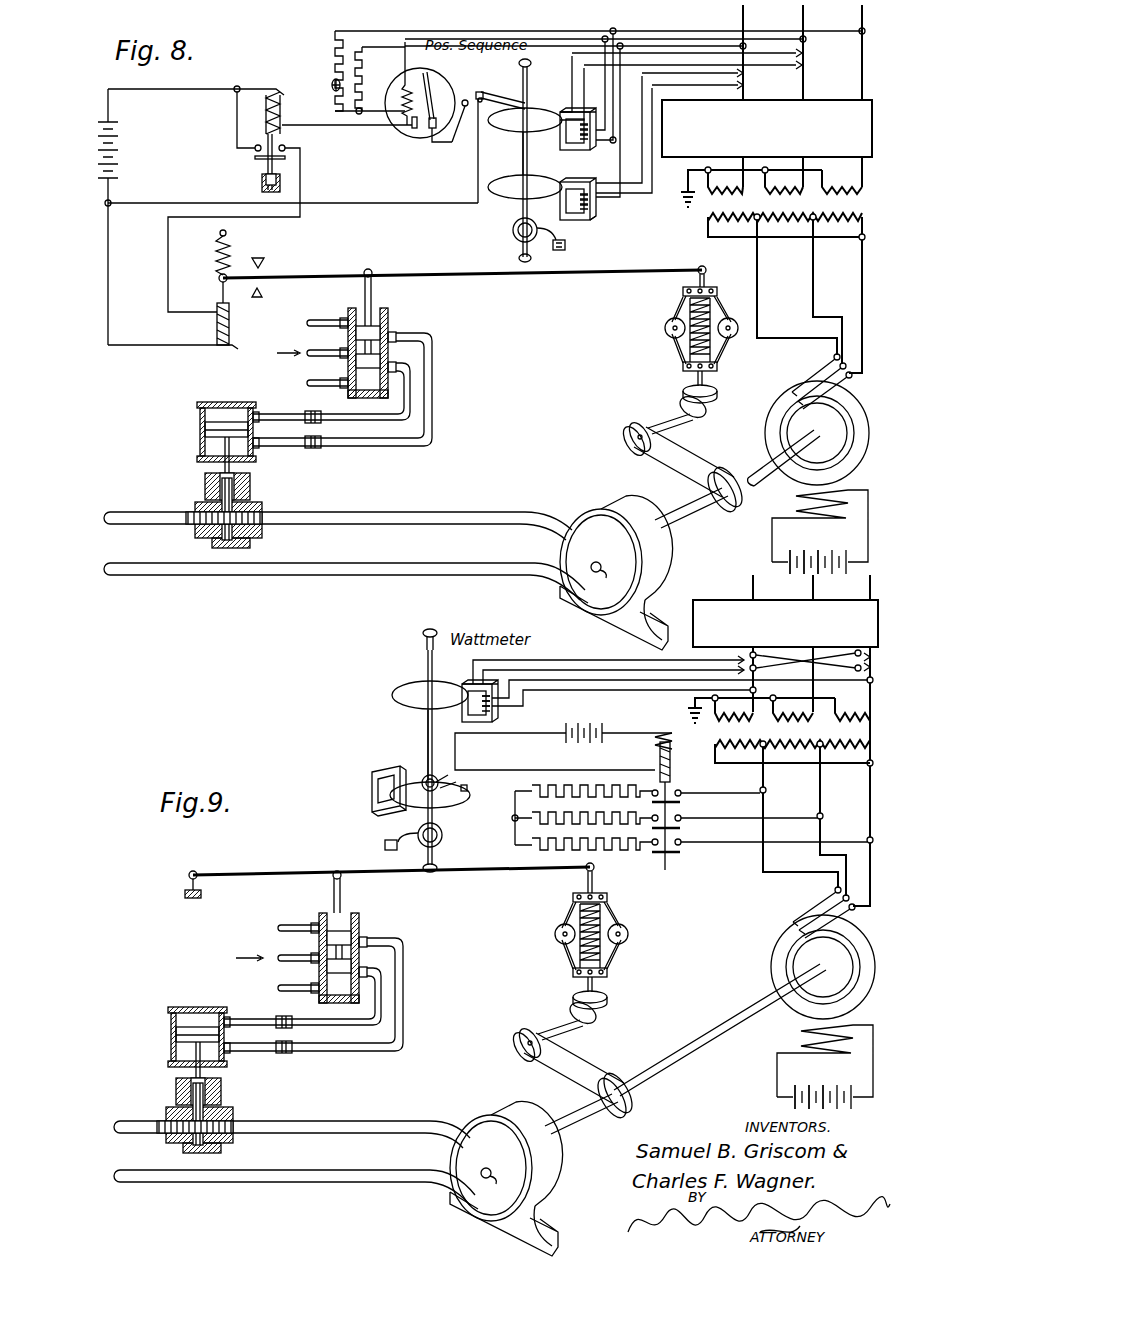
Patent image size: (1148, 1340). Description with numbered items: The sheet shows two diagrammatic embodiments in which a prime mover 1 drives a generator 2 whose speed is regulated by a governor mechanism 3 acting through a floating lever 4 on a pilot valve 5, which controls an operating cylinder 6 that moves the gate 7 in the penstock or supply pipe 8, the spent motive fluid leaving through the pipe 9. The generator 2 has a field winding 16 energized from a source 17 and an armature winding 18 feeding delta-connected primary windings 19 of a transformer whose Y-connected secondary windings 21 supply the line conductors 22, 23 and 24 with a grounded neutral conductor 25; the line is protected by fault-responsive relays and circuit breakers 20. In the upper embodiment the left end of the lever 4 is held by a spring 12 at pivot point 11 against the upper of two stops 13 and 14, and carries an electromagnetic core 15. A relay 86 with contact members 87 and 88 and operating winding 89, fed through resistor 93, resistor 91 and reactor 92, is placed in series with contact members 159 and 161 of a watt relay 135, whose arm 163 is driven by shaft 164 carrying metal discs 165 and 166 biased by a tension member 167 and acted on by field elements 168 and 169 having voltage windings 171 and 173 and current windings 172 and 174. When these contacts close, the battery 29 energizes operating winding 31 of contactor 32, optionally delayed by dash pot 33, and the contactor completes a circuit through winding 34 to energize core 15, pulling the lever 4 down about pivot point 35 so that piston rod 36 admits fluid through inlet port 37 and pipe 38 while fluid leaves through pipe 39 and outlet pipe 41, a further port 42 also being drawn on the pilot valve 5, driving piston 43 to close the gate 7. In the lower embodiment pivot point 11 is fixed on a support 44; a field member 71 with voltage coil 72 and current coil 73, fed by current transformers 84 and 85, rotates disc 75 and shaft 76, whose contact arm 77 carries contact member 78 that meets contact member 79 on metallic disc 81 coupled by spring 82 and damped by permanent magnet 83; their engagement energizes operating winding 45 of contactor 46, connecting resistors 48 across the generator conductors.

In FIG. 8, the prime mover 1 is at (598, 492).
In FIG. 9, the prime mover 1 is at (488, 1098).
In FIG. 8, the generator 2 is at (750, 418).
In FIG. 9, the generator 2 is at (756, 952).
In FIG. 8, the governor mechanism 3 is at (657, 354).
In FIG. 9, the governor mechanism 3 is at (545, 960).
In FIG. 8, the floating lever 4 is at (648, 270).
In FIG. 9, the floating lever 4 is at (486, 870).
In FIG. 8, the pilot valve 5 is at (412, 318).
In FIG. 9, the pilot valve 5 is at (351, 955).
In FIG. 8, the operating cylinder 6 is at (185, 436).
In FIG. 9, the operating cylinder 6 is at (187, 1043).
In FIG. 8, the gate 7 is at (185, 498).
In FIG. 9, the gate 7 is at (189, 1115).
In FIG. 8, the penstock or supply pipe 8 is at (415, 512).
In FIG. 9, the penstock or supply pipe 8 is at (341, 1120).
In FIG. 8, the pipe 9 is at (415, 563).
In FIG. 9, the pipe 9 is at (341, 1170).
In FIG. 8, the pivot point 11 is at (218, 274).
In FIG. 9, the pivot point 11 is at (189, 877).
In FIG. 8, the spring 12 is at (216, 248).
In FIG. 8, the stop 13 is at (266, 260).
In FIG. 8, the stop 14 is at (264, 293).
In FIG. 8, the electromagnetic core 15 is at (232, 311).
In FIG. 8, the field winding 16 is at (838, 516).
In FIG. 9, the field winding 16 is at (836, 1052).
In FIG. 8, the source 17 is at (810, 550).
In FIG. 9, the source 17 is at (840, 1098).
In FIG. 8, the armature winding 18 is at (860, 404).
In FIG. 9, the armature winding 18 is at (792, 1008).
In FIG. 8, the primary windings 19 is at (708, 228).
In FIG. 9, the primary windings 19 is at (714, 756).
In FIG. 8, the fault-responsive relays and circuit breakers 20 is at (815, 100).
In FIG. 9, the fault-responsive relays and circuit breakers 20 is at (703, 600).
In FIG. 8, the secondary windings 21 is at (714, 197).
In FIG. 9, the secondary windings 21 is at (717, 725).
In FIG. 8, the transmission line conductor 22 is at (724, 96).
In FIG. 9, the transmission line conductor 22 is at (739, 643).
In FIG. 8, the transmission line conductor 23 is at (784, 96).
In FIG. 9, the transmission line conductor 23 is at (794, 643).
In FIG. 8, the transmission line conductor 24 is at (844, 189).
In FIG. 9, the transmission line conductor 24 is at (855, 740).
In FIG. 8, the grounded neutral conductor 25 is at (684, 182).
In FIG. 9, the grounded neutral conductor 25 is at (692, 707).
In FIG. 8, the battery 29 is at (122, 152).
In FIG. 9, the battery 29 is at (588, 727).
In FIG. 8, the operating winding 31 is at (283, 112).
In FIG. 8, the contactor 32 is at (255, 158).
In FIG. 8, the dash pot 33 is at (262, 185).
In FIG. 8, the winding 34 is at (232, 337).
In FIG. 8, the pivot point 35 is at (707, 266).
In FIG. 9, the pivot point 35 is at (595, 869).
In FIG. 8, the piston rod 36 is at (372, 290).
In FIG. 9, the piston rod 36 is at (342, 892).
In FIG. 8, the inlet port 37 is at (316, 353).
In FIG. 9, the inlet port 37 is at (277, 952).
In FIG. 8, the pipe 38 is at (384, 421).
In FIG. 9, the pipe 38 is at (302, 1004).
In FIG. 8, the pipe 39 is at (384, 447).
In FIG. 9, the pipe 39 is at (313, 1002).
In FIG. 8, the outlet pipe 41 is at (315, 323).
In FIG. 9, the outlet pipe 41 is at (290, 922).
In FIG. 8, the exhaust port 42 is at (315, 383).
In FIG. 9, the exhaust port 42 is at (290, 982).
In FIG. 8, the piston 43 is at (236, 428).
In FIG. 9, the piston 43 is at (197, 1026).
In FIG. 9, the support 44 is at (185, 894).
In FIG. 9, the operating winding 45 is at (658, 752).
In FIG. 9, the contactor 46 is at (690, 853).
In FIG. 9, the resistors 48 is at (565, 852).
In FIG. 9, the field member 71 is at (462, 716).
In FIG. 9, the voltage coil 72 is at (496, 708).
In FIG. 9, the current coil 73 is at (472, 684).
In FIG. 9, the disc 75 is at (405, 680).
In FIG. 9, the shaft 76 is at (425, 718).
In FIG. 9, the contact arm 77 is at (438, 780).
In FIG. 9, the contact member 78 is at (452, 784).
In FIG. 9, the contact member 79 is at (468, 787).
In FIG. 9, the metallic disc 81 is at (455, 803).
In FIG. 9, the spring 82 is at (424, 779).
In FIG. 9, the permanent magnet 83 is at (372, 798).
In FIG. 9, the current transformer 84 is at (788, 664).
In FIG. 9, the current transformer 85 is at (855, 670).
In FIG. 8, the relay 86 is at (457, 67).
In FIG. 8, the contact member 87 is at (431, 130).
In FIG. 8, the contact member 88 is at (412, 126).
In FIG. 8, the operating winding 89 is at (402, 84).
In FIG. 8, the resistor 91 is at (334, 46).
In FIG. 8, the reactor 92 is at (333, 84).
In FIG. 8, the resistor 93 is at (364, 57).
In FIG. 8, the watt relay 135 is at (560, 66).
In FIG. 8, the contact member 159 is at (459, 136).
In FIG. 8, the contact member 161 is at (486, 90).
In FIG. 8, the arm 163 is at (506, 97).
In FIG. 8, the shaft 164 is at (522, 157).
In FIG. 8, the metal disc 165 is at (510, 125).
In FIG. 8, the metal disc 166 is at (506, 196).
In FIG. 8, the tension member 167 is at (512, 232).
In FIG. 9, the tension member 167 is at (444, 836).
In FIG. 8, the field element 168 is at (558, 156).
In FIG. 8, the field element 169 is at (585, 169).
In FIG. 8, the voltage winding 171 is at (592, 146).
In FIG. 8, the current winding 172 is at (574, 111).
In FIG. 8, the voltage winding 173 is at (597, 211).
In FIG. 8, the current winding 174 is at (580, 222).